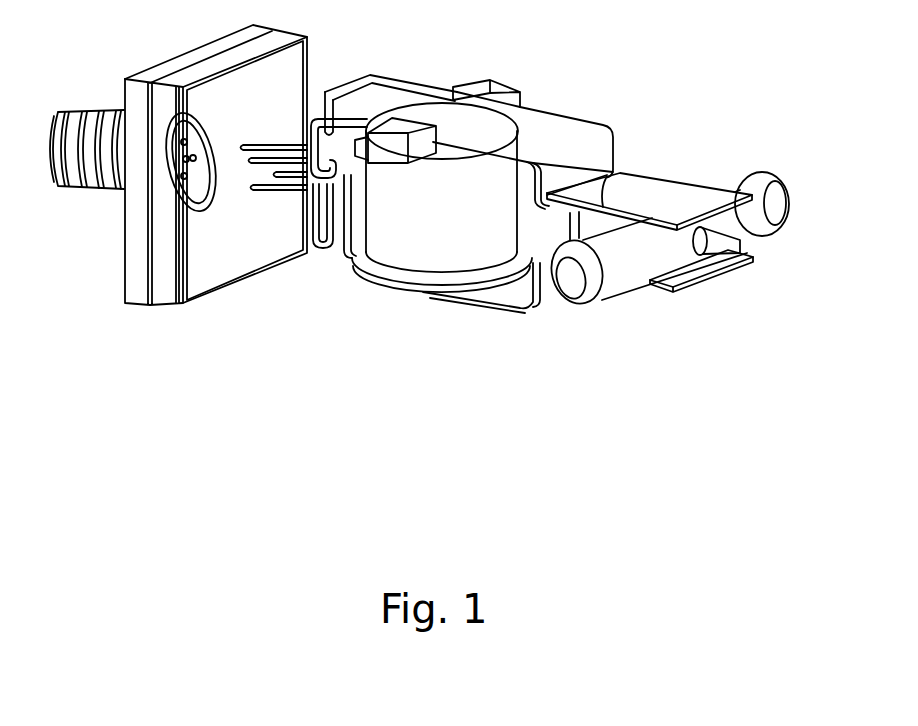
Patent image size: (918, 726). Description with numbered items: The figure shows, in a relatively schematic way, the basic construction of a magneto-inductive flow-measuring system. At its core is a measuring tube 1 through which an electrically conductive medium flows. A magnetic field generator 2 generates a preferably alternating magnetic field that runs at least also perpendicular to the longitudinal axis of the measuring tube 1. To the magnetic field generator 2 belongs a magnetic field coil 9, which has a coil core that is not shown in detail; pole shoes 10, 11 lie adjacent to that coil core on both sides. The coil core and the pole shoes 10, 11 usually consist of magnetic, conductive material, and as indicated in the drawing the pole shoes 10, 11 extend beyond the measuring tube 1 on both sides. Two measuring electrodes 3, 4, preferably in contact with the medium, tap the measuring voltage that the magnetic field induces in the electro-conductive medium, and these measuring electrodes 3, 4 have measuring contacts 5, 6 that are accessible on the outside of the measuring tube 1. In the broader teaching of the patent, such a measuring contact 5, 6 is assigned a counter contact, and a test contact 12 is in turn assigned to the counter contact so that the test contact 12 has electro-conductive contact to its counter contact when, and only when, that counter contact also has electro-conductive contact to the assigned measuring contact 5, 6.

The measuring tube 1 is at (617, 270).
The magnetic field generator 2 is at (378, 317).
The measuring electrode 3 is at (623, 142).
The measuring electrode 4 is at (738, 302).
The measuring contact 5 is at (600, 218).
The measuring contact 6 is at (742, 262).
The magnetic field coil 9 is at (437, 231).
The pole shoe 10 is at (707, 200).
The pole shoe 11 is at (500, 303).
The test contact 12 is at (540, 130).